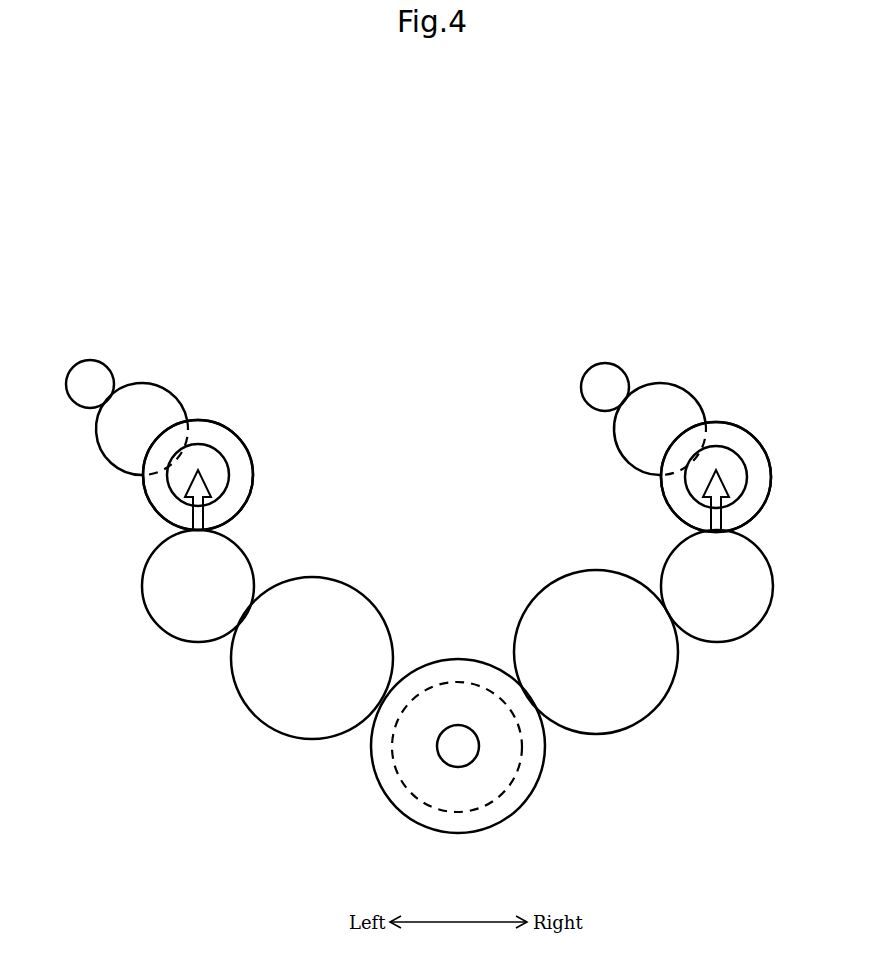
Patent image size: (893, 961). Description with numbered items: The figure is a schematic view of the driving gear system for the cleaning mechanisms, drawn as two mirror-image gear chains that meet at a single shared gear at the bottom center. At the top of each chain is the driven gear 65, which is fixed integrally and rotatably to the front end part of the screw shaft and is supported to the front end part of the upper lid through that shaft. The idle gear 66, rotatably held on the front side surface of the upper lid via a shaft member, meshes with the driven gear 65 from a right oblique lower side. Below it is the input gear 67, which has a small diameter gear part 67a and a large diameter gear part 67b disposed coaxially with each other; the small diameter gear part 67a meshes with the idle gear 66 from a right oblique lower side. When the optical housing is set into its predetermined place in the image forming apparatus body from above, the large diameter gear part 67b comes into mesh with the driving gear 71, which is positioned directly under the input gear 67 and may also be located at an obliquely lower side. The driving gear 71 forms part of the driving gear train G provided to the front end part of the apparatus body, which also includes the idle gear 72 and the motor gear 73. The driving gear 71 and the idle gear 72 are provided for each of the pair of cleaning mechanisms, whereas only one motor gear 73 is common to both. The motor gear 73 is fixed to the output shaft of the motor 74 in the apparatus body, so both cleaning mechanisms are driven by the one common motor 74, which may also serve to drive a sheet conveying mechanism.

The driven gear 65 is at (93, 359).
The idle gear 66 is at (145, 382).
The input gear 67 is at (224, 427).
The small diameter gear part 67a is at (227, 462).
The large diameter gear part 67b is at (243, 442).
The driving gear 71 is at (247, 549).
The idle gear 72 is at (372, 600).
The motor gear 73 is at (462, 659).
The motor 74 is at (508, 788).
The driving gear train G is at (232, 705).